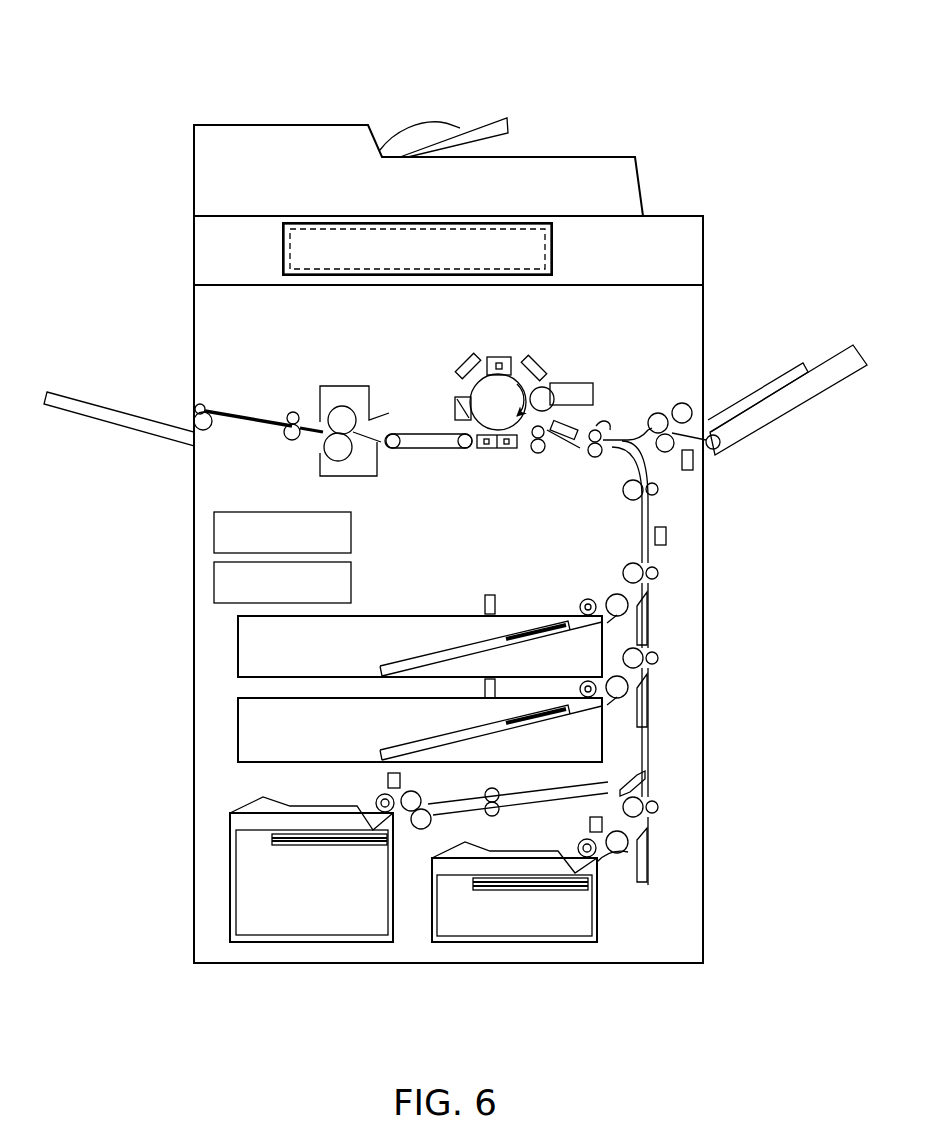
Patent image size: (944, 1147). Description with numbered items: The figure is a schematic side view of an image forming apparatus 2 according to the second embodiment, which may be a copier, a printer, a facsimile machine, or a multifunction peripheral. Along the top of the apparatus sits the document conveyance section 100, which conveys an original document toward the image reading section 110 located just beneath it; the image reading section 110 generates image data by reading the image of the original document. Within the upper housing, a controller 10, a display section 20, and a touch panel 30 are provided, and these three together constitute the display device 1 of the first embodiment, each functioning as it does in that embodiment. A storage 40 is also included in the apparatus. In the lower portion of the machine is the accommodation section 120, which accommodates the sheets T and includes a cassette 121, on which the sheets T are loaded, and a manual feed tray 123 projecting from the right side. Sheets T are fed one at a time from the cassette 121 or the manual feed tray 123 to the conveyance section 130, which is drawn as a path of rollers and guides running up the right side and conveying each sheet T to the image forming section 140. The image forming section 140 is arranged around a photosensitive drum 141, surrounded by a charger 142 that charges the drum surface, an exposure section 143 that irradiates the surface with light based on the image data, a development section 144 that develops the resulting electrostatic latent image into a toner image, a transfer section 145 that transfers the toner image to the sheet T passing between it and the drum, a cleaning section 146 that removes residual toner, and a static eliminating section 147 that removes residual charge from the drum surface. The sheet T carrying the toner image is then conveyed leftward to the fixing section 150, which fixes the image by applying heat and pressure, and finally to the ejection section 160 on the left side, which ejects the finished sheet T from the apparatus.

The display device 1 is at (264, 233).
The image forming apparatus 2 is at (482, 86).
The controller 10 is at (214, 522).
The display section 20 is at (283, 252).
The touch panel 30 is at (283, 262).
The storage 40 is at (214, 574).
The document conveyance section 100 is at (582, 157).
The image reading section 110 is at (703, 238).
The accommodation section 120 is at (252, 778).
The cassette 121 is at (238, 634).
The manual feed tray 123 is at (818, 362).
The conveyance section 130 is at (684, 700).
The image forming section 140 is at (390, 372).
The photosensitive drum 141 is at (480, 393).
The charger 142 is at (498, 357).
The exposure section 143 is at (535, 355).
The development section 144 is at (594, 395).
The transfer section 145 is at (493, 450).
The cleaning section 146 is at (455, 400).
The static eliminating section 147 is at (465, 353).
The fixing section 150 is at (366, 481).
The ejection section 160 is at (184, 406).
The sheet T is at (756, 386).